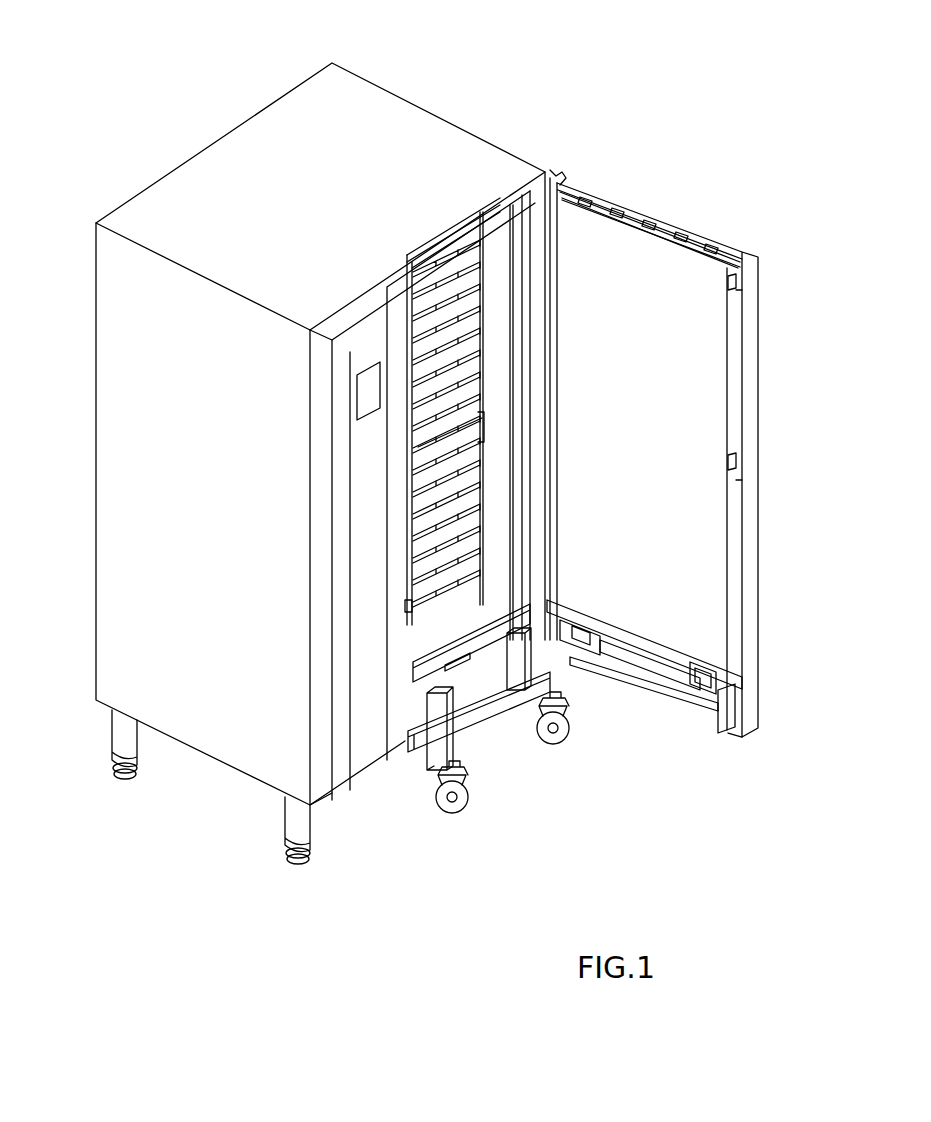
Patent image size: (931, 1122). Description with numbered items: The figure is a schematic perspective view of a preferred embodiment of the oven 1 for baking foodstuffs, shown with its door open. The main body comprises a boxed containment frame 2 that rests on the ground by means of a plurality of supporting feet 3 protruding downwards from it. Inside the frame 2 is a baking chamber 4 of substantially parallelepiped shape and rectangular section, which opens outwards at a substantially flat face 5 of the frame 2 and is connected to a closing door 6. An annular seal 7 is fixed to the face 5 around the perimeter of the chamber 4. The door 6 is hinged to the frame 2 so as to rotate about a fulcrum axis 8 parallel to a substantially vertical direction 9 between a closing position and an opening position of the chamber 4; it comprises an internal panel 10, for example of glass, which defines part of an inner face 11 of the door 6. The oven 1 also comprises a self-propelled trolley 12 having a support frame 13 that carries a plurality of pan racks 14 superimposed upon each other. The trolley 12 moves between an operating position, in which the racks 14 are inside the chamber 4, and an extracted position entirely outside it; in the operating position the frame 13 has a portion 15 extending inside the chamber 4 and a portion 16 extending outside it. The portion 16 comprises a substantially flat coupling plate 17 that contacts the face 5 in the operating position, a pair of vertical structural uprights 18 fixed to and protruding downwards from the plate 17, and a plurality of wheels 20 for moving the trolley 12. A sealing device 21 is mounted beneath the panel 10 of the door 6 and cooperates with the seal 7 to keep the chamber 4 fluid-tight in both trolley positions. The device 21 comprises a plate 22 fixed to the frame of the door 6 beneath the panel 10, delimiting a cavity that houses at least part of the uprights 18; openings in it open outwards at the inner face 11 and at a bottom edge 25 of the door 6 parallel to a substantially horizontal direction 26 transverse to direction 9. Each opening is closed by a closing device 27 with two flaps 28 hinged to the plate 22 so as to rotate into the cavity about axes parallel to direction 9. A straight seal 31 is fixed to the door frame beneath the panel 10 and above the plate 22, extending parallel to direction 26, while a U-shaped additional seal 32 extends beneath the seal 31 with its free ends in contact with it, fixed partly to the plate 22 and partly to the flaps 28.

The oven 1 is at (662, 118).
The boxed containment frame 2 is at (225, 140).
The supporting feet 3 is at (116, 748).
The baking chamber 4 is at (493, 252).
The flat face 5 is at (535, 178).
The closing door 6 is at (757, 505).
The annular seal 7 is at (462, 232).
The fulcrum axis 8 is at (558, 152).
The vertical direction 9 is at (86, 343).
The internal panel 10 is at (705, 262).
The inner face 11 is at (672, 328).
The self-propelled trolley 12 is at (479, 748).
The support frame 13 is at (420, 807).
The pan racks 14 is at (430, 262).
The portion extending inside the chamber 15 is at (404, 606).
The portion extending outside the chamber 16 is at (489, 752).
The coupling plate 17 is at (410, 738).
The vertical structural uprights 18 is at (437, 748).
The wheels 20 is at (438, 822).
The sealing device 21 is at (640, 704).
The plate 22 is at (630, 632).
The bottom edge 25 is at (660, 697).
The horizontal direction 26 is at (696, 206).
The closing device 27 is at (700, 660).
The flaps 28 is at (700, 700).
The straight seal 31 is at (650, 650).
The additional seal 32 is at (625, 680).